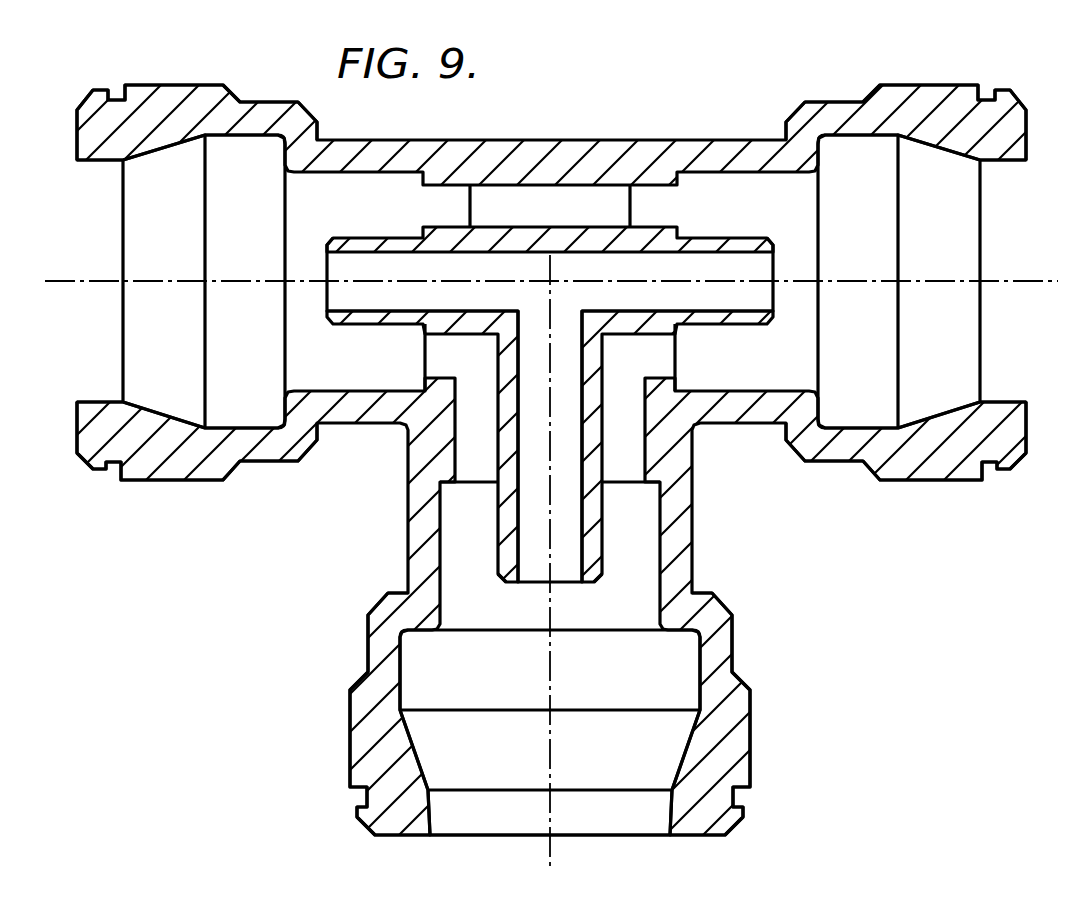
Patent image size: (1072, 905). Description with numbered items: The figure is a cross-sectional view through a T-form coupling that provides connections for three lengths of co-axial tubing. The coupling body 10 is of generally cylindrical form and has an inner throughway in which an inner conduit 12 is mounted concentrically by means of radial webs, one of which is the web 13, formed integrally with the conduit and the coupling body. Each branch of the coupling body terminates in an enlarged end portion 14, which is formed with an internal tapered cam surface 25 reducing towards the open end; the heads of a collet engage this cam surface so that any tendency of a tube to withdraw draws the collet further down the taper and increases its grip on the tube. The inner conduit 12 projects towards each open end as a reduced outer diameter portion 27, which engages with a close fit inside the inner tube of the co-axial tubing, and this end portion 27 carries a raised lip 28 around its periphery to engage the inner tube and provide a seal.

The tube coupling body 10 is at (501, 148).
The inner conduit 12 is at (588, 240).
The radial web 13 is at (570, 195).
The enlarged end portion 14 is at (182, 92).
The internal tapered cam surface 25 is at (160, 148).
The reduced outer diameter portion 27 is at (394, 236).
The raised lip 28 is at (327, 243).